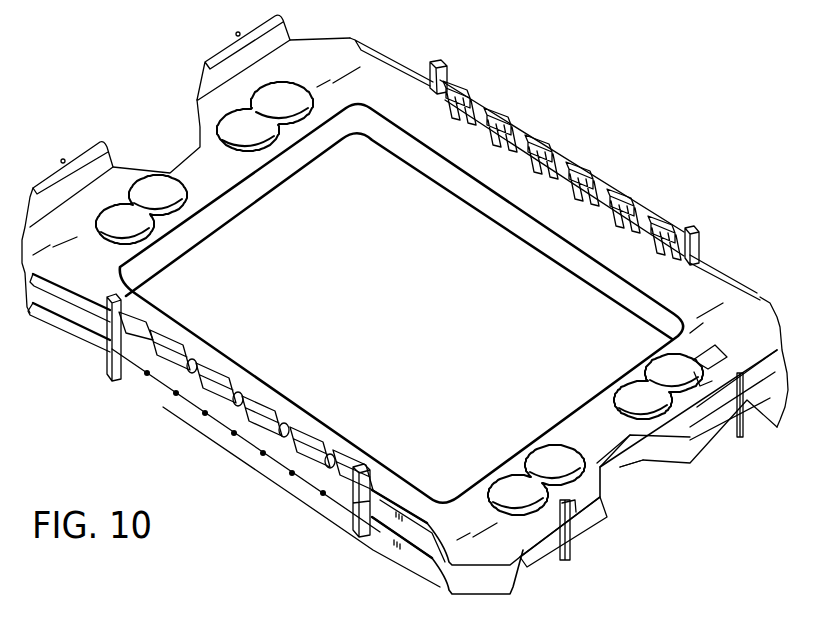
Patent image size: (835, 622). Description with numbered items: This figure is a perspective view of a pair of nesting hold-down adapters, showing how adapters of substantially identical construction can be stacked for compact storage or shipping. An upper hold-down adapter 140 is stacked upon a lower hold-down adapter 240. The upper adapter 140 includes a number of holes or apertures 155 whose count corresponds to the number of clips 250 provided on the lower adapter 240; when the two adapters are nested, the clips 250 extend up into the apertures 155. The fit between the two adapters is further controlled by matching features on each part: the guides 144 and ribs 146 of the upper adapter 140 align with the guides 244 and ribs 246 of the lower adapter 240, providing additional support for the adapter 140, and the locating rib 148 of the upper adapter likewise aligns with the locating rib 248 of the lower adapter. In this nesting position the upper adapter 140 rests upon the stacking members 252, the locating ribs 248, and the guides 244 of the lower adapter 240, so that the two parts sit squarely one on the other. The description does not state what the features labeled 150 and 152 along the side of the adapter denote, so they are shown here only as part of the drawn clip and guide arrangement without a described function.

The hold-down adapter 140 is at (760, 344).
The guides 144 is at (280, 38).
The ribs 146 is at (748, 368).
The locating rib 148 is at (447, 75).
The clip strip 150 is at (232, 372).
The clips 152 is at (205, 355).
The apertures 155 is at (505, 140).
The hold-down adapter 240 is at (658, 447).
The guides 244 is at (742, 438).
The ribs 246 is at (655, 447).
The locating rib 248 is at (350, 523).
The clips 250 is at (200, 417).
The stacking members 252 is at (190, 402).